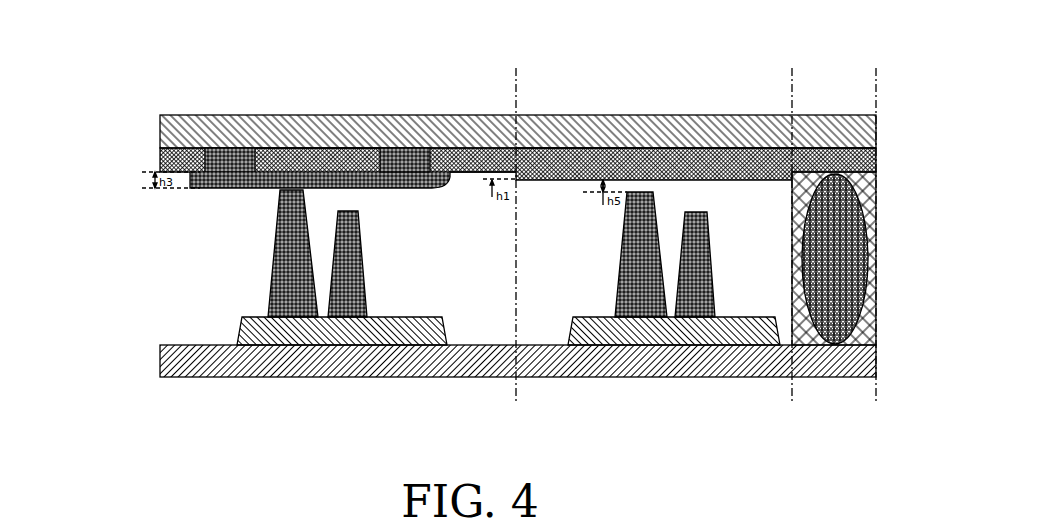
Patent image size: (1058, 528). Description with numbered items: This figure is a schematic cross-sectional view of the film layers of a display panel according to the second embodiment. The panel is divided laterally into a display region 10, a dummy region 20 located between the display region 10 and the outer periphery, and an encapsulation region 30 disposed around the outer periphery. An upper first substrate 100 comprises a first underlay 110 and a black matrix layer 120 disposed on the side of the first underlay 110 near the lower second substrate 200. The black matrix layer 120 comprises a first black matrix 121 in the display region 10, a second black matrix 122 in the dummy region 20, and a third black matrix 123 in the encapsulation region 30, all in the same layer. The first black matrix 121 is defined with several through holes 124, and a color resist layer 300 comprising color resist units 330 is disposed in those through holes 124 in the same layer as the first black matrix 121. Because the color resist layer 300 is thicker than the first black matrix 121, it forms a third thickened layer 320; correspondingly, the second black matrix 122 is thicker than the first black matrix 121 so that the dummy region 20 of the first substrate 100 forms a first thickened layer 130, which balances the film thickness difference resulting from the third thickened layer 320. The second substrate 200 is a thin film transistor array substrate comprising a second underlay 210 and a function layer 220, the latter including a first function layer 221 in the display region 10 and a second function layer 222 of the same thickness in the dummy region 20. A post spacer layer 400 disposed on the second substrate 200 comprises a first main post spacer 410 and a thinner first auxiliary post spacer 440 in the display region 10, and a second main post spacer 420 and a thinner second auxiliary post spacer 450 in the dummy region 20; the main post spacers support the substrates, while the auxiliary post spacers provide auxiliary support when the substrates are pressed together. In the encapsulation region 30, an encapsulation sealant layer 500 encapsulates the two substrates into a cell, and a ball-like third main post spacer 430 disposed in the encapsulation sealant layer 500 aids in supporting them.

The display region 10 is at (516, 81).
The dummy region 20 is at (516, 81).
The encapsulation region 30 is at (876, 81).
The first substrate 100 is at (468, 147).
The first underlay 110 is at (160, 130).
The black matrix layer 120 is at (160, 160).
The first black matrix 121 is at (275, 147).
The second black matrix 122 is at (643, 148).
The third black matrix 123 is at (841, 148).
The through hole 124 is at (207, 152).
The first thickened layer 130 is at (478, 177).
The second substrate 200 is at (468, 385).
The second underlay 210 is at (160, 363).
The function layer 220 is at (508, 385).
The first function layer 221 is at (372, 337).
The second function layer 222 is at (674, 368).
The color resist layer 300 is at (280, 132).
The third thickened layer 320 is at (135, 180).
The color resist unit 330 is at (307, 188).
The post spacer layer 400 is at (406, 254).
The first main post spacer 410 is at (278, 281).
The second main post spacer 420 is at (632, 281).
The third main post spacer 430 is at (850, 263).
The first auxiliary post spacer 440 is at (350, 281).
The second auxiliary post spacer 450 is at (702, 281).
The encapsulation sealant layer 500 is at (859, 258).